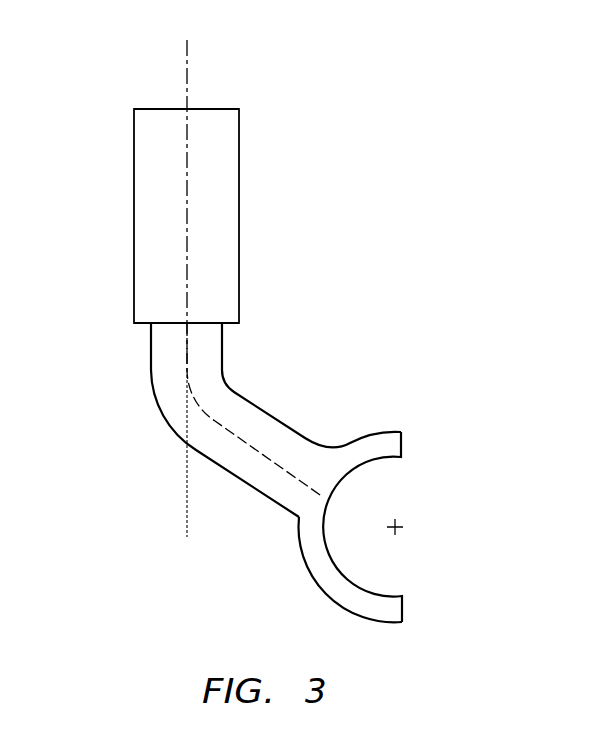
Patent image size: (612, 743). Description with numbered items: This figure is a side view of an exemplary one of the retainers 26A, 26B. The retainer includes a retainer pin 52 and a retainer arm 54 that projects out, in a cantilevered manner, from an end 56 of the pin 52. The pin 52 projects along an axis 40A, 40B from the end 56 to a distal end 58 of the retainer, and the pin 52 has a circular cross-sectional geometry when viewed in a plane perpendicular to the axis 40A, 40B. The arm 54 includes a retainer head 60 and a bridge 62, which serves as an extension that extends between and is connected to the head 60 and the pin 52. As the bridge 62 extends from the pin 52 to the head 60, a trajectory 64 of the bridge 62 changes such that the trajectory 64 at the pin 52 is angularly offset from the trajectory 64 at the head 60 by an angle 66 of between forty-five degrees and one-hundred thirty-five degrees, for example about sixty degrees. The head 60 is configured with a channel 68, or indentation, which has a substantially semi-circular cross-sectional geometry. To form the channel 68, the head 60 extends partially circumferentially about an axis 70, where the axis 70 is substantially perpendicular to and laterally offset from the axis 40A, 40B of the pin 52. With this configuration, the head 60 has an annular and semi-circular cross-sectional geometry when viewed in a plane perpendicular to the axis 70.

The retainer 26A is at (262, 338).
The retainer 26B is at (381, 135).
The axis 40A is at (267, 281).
The axis 40B is at (189, 52).
The retainer pin 52 is at (126, 225).
The retainer arm 54 is at (250, 391).
The end of the pin 56 is at (137, 325).
The distal end 58 is at (150, 108).
The retainer head 60 is at (321, 593).
The bridge 62 is at (164, 428).
The trajectory 64 is at (249, 439).
The angle 66 is at (290, 482).
The channel 68 is at (388, 496).
The axis 70 is at (398, 530).